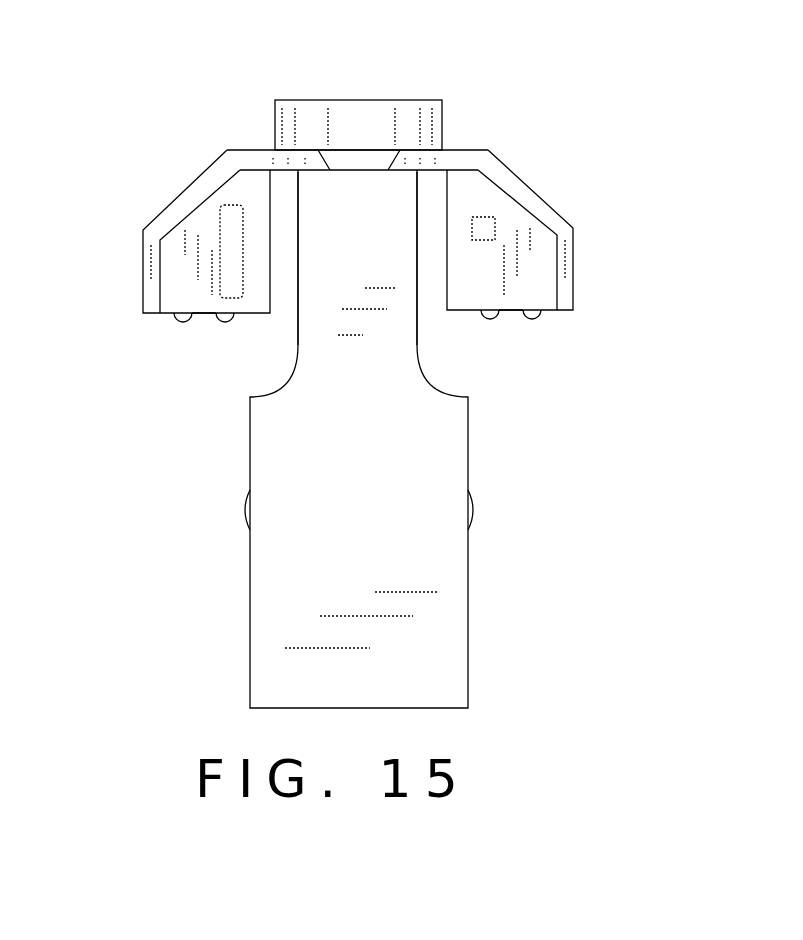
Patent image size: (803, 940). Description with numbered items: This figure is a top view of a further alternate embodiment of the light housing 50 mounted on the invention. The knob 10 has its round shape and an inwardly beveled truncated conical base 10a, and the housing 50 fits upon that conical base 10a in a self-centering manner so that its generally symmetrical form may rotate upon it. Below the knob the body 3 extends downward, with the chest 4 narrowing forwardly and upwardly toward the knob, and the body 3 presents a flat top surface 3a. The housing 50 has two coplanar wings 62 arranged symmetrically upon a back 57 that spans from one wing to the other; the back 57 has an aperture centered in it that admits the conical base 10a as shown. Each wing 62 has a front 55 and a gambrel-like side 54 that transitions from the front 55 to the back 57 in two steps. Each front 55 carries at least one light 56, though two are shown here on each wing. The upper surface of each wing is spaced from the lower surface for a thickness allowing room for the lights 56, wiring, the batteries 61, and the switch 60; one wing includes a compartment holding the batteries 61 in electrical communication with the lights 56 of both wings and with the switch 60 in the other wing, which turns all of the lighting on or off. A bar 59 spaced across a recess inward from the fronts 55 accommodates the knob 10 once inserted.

The body 3 is at (492, 525).
The flat top surface 3a is at (378, 508).
The chest 4 is at (362, 225).
The knob 10 is at (378, 100).
The conical base 10a is at (352, 167).
The housing 50 is at (520, 222).
The side 54 is at (387, 230).
The front 55 is at (205, 318).
The light 56 is at (178, 320).
The back 57 is at (255, 148).
The bar 59 is at (177, 198).
The switch 60 is at (494, 215).
The batteries 61 is at (236, 205).
The wings 62 is at (173, 250).